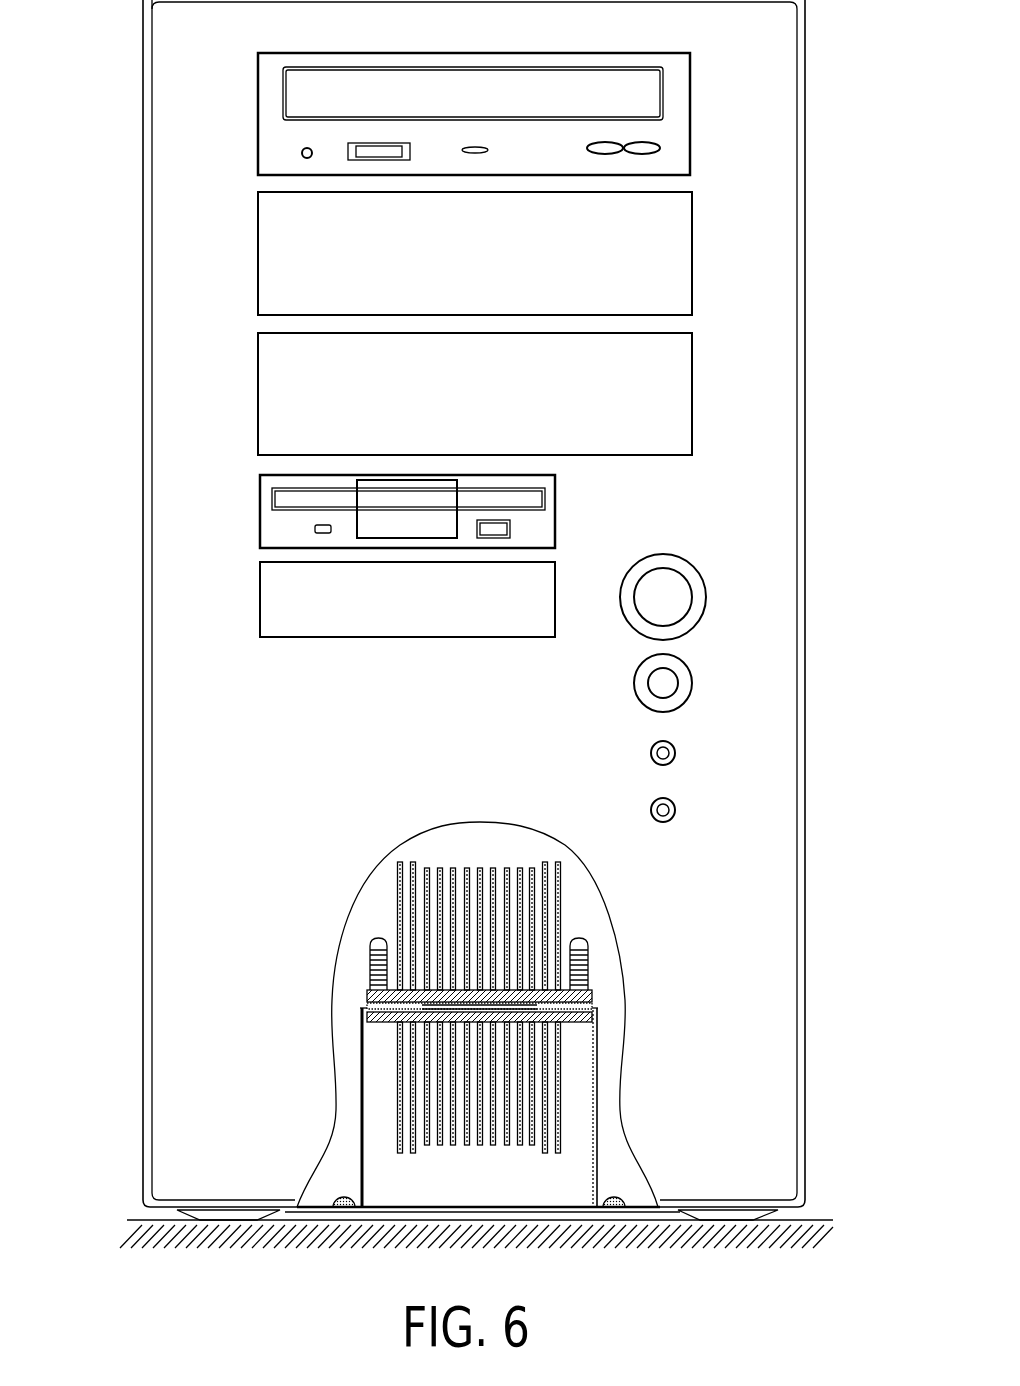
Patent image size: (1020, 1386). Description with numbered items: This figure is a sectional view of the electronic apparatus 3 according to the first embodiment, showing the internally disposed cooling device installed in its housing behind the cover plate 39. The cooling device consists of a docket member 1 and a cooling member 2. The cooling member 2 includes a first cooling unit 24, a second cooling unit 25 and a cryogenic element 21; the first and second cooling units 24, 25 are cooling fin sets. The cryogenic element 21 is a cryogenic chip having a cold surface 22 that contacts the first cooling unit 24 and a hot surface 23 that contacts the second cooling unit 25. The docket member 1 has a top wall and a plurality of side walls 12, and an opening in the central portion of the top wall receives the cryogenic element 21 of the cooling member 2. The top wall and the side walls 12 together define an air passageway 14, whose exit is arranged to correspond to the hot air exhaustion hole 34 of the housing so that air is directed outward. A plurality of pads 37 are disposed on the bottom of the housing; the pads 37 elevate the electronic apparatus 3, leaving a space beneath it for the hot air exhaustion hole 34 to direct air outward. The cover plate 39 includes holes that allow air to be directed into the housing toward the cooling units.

The docket member 1 is at (491, 1075).
The cooling member 2 is at (485, 928).
The electronic apparatus 3 is at (814, 404).
The side walls 12 is at (597, 1075).
The air passageway 14 is at (407, 1173).
The cryogenic element 21 is at (585, 985).
The cold surface 22 is at (397, 987).
The hot surface 23 is at (400, 1022).
The first cooling unit 24 is at (560, 910).
The second cooling unit 25 is at (560, 1102).
The hot air exhaustion hole 34 is at (520, 1208).
The pads 37 is at (730, 1215).
The cover plate 39 is at (175, 590).